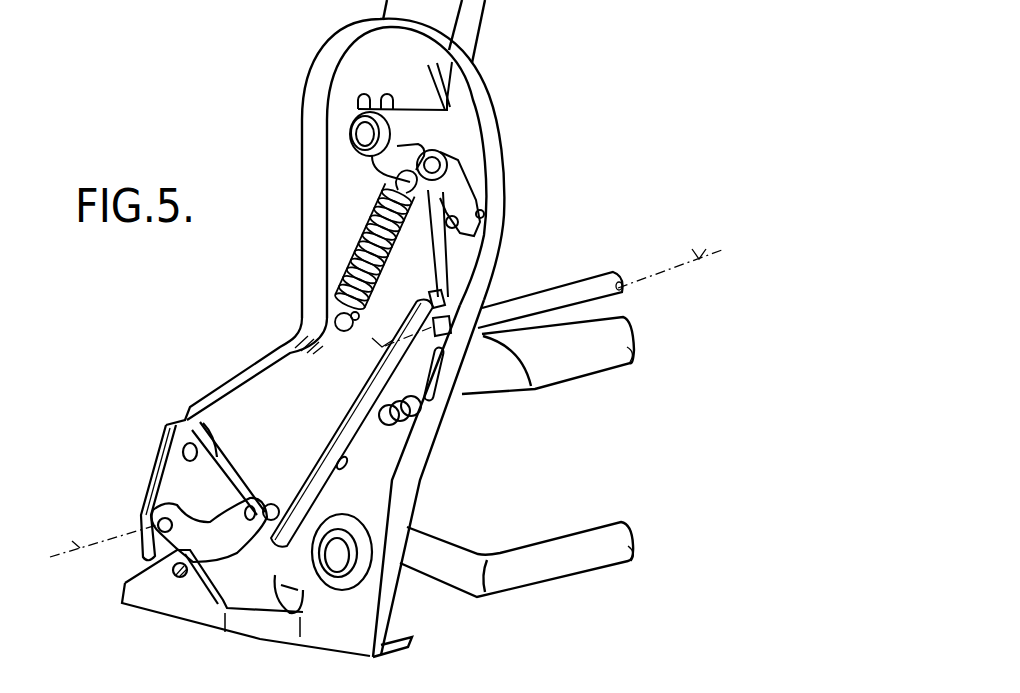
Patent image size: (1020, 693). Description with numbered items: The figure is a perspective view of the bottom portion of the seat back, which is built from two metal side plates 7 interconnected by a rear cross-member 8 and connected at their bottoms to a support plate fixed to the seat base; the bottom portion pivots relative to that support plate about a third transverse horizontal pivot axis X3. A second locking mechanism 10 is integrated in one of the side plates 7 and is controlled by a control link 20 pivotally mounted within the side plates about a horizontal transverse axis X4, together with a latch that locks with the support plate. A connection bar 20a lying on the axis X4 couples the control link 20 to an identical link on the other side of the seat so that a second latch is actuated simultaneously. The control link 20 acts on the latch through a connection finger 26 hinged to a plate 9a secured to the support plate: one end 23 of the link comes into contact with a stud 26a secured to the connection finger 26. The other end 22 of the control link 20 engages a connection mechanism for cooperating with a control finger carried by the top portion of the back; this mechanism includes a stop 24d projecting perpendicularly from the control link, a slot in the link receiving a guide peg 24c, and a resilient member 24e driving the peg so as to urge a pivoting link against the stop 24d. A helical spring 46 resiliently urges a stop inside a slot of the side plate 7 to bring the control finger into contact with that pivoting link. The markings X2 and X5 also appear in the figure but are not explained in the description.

The side plate 7 is at (493, 170).
The rear cross-member 8 is at (583, 358).
The plate 9a is at (176, 426).
The locking mechanism 10 is at (190, 477).
The control link 20 is at (392, 375).
The connection bar 20a is at (590, 289).
The other end of the control link 22 is at (455, 150).
The end of the control link 23 is at (253, 530).
The guide peg 24c is at (477, 228).
The stop 24d is at (483, 215).
The resilient member 24e is at (448, 188).
The connection finger 26 is at (210, 543).
The stud 26a is at (267, 503).
The spring 46 is at (363, 263).
The section marker X2 is at (363, 135).
The third transverse horizontal pivot axis X3 is at (327, 555).
The horizontal transverse axis X4 is at (543, 282).
The section marker X5 is at (103, 535).